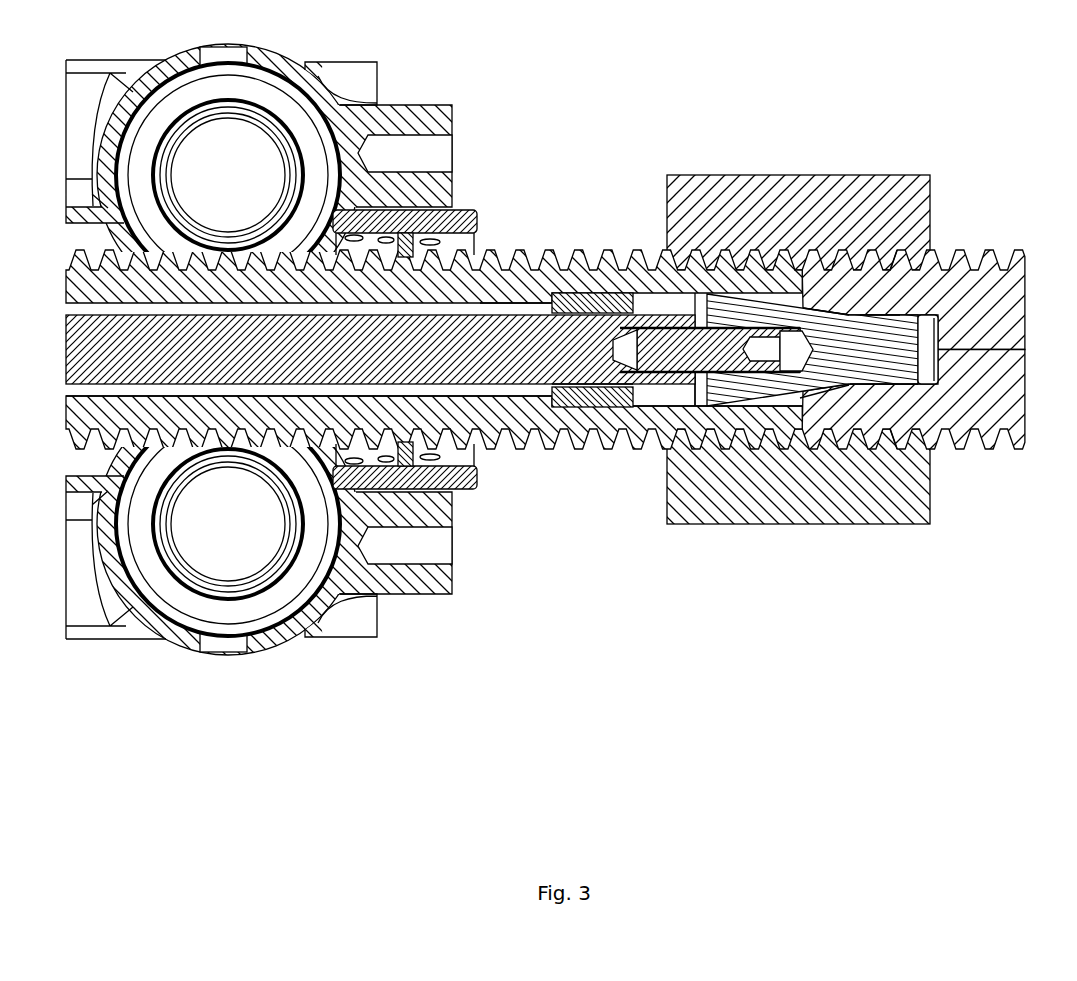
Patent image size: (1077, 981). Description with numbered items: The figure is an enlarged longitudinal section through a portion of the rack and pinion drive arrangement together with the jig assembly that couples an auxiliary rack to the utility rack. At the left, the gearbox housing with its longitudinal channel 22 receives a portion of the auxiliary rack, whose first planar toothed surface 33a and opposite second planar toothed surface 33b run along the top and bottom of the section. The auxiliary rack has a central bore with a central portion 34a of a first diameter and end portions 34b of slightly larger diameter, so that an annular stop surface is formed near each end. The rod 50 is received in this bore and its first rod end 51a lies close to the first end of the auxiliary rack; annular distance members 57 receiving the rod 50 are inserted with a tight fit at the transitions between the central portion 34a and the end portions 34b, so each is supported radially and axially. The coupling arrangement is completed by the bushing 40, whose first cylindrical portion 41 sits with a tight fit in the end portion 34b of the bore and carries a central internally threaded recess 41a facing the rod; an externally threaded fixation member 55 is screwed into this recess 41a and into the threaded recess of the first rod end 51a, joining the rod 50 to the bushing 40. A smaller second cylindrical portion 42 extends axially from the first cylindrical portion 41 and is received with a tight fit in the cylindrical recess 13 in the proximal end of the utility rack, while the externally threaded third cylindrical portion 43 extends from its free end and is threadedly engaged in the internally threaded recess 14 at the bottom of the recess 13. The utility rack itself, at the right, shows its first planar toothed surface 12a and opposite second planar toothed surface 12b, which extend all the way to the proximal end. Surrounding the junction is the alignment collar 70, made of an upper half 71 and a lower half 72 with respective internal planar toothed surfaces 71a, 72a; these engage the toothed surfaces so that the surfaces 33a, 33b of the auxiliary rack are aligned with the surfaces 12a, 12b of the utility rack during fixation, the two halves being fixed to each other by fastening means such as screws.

The first planar toothed surface 12a is at (988, 259).
The second planar toothed surface 12b is at (990, 450).
The cylindrical recess 13 is at (824, 305).
The internally threaded recess 14 is at (500, 305).
The longitudinal channel 22 is at (97, 230).
The first planar toothed surface 33a is at (523, 258).
The second planar toothed surface 33b is at (530, 440).
The central portion 34a is at (495, 398).
The end portions 34b is at (662, 401).
The bushing 40 is at (700, 304).
The first cylindrical portion 41 is at (745, 407).
The central internally threaded recess 41a is at (786, 368).
The second cylindrical portion 42 is at (822, 396).
The third cylindrical portion 43 is at (880, 388).
The rod 50 is at (76, 388).
The first rod end 51a is at (592, 384).
The fixation member 55 is at (700, 386).
The distance members 57 is at (583, 410).
The alignment collar 70 is at (849, 317).
The upper half 71 is at (932, 205).
The internal planar toothed surface 71a is at (905, 261).
The lower half 72 is at (930, 486).
The internal planar toothed surface 72a is at (905, 447).